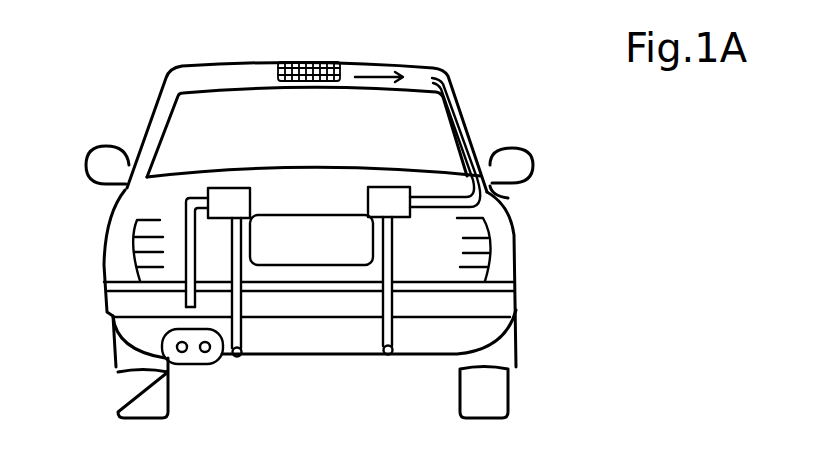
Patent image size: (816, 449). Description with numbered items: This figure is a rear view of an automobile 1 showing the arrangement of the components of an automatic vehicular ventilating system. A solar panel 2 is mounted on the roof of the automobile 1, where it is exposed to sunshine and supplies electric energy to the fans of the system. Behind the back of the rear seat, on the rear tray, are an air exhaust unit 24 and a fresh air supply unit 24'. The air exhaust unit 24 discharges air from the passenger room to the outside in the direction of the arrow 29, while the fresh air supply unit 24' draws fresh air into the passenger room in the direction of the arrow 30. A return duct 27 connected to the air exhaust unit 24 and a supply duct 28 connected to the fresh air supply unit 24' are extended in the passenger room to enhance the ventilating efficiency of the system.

The automobile 1 is at (97, 230).
The solar panel 2 is at (315, 58).
The air exhaust unit 24 is at (405, 234).
The fresh air supply unit 24' is at (262, 198).
The return duct 27 is at (513, 192).
The supply duct 28 is at (181, 254).
The arrow indicating exhaust direction 29 is at (388, 365).
The arrow indicating fresh air supply direction 30 is at (243, 373).